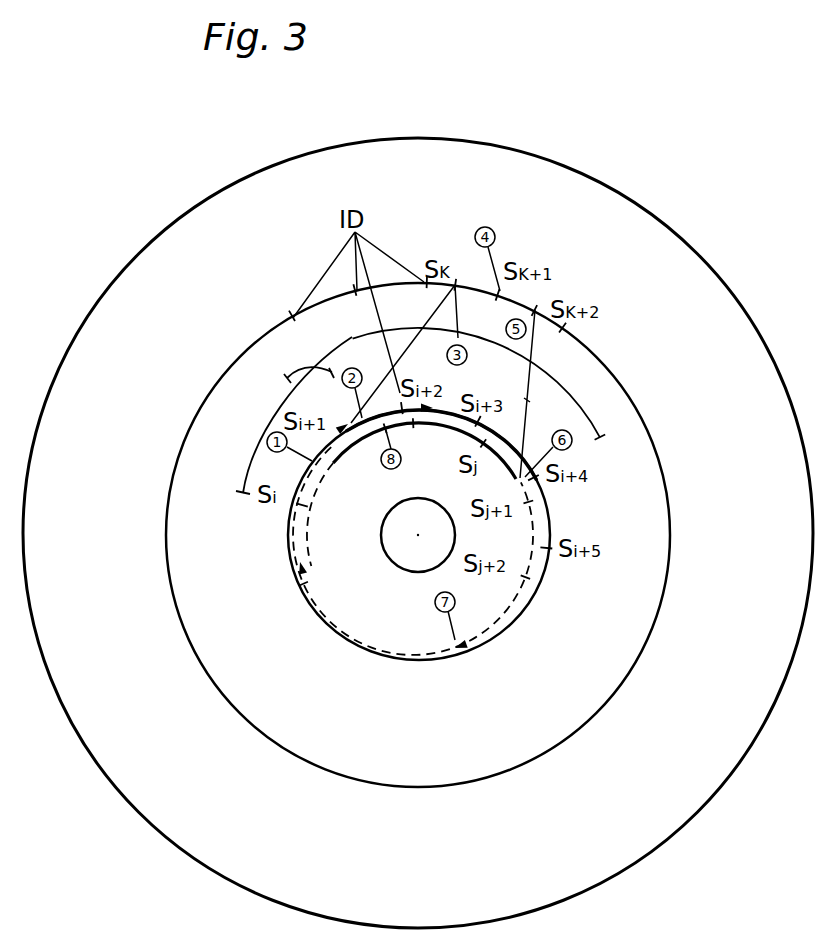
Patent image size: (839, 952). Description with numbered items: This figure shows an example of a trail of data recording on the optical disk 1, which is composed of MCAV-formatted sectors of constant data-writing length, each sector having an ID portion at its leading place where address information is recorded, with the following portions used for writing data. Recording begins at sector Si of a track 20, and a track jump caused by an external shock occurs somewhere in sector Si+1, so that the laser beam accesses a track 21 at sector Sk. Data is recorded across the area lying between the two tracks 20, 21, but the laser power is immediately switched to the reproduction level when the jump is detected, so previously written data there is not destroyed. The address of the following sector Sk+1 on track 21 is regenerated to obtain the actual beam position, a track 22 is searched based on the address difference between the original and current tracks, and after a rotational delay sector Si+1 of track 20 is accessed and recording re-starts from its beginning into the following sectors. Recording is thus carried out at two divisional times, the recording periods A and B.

The optical disk 1 is at (87, 314).
The track 20 is at (330, 455).
The track 21 is at (607, 363).
The track 22 is at (519, 601).
The recording period A is at (261, 441).
The recording period B is at (352, 338).